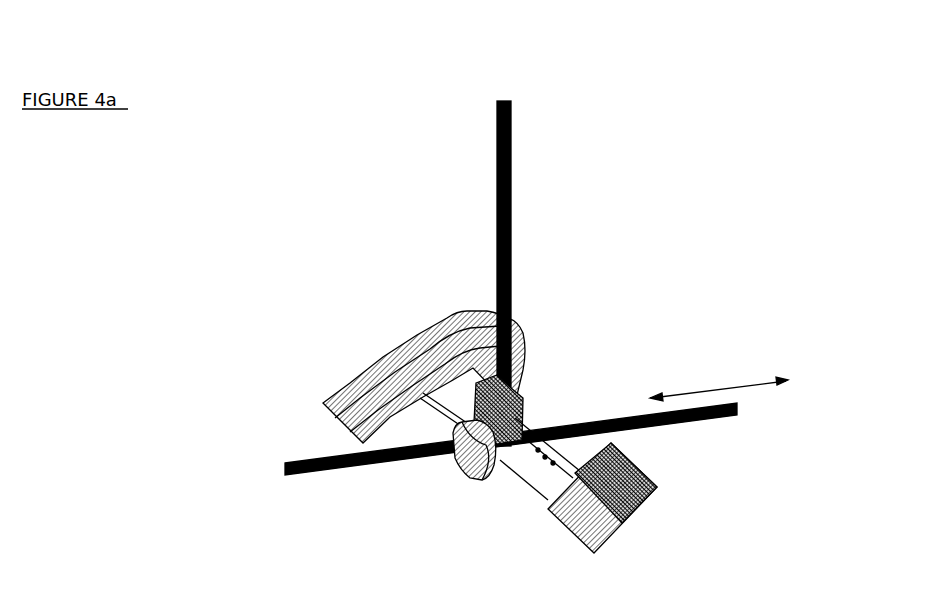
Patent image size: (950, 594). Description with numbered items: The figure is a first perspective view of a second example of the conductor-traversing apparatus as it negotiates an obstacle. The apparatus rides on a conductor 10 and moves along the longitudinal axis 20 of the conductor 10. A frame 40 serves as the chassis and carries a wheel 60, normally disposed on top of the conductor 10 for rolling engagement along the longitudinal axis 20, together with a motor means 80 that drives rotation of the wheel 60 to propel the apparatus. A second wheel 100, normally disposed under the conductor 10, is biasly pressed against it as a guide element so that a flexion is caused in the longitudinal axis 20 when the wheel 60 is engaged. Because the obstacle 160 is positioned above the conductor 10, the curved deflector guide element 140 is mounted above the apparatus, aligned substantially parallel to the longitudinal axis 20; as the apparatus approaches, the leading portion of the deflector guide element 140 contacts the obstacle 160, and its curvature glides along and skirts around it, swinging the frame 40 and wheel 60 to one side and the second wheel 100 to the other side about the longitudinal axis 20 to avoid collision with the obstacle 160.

The conductor 10 is at (514, 439).
The longitudinal axis 20 is at (719, 385).
The frame 40 is at (540, 459).
The wheel 60 is at (509, 410).
The motor means 80 is at (608, 498).
The second wheel 100 is at (469, 457).
The deflector guide element 140 is at (414, 351).
The obstacle 160 is at (516, 287).